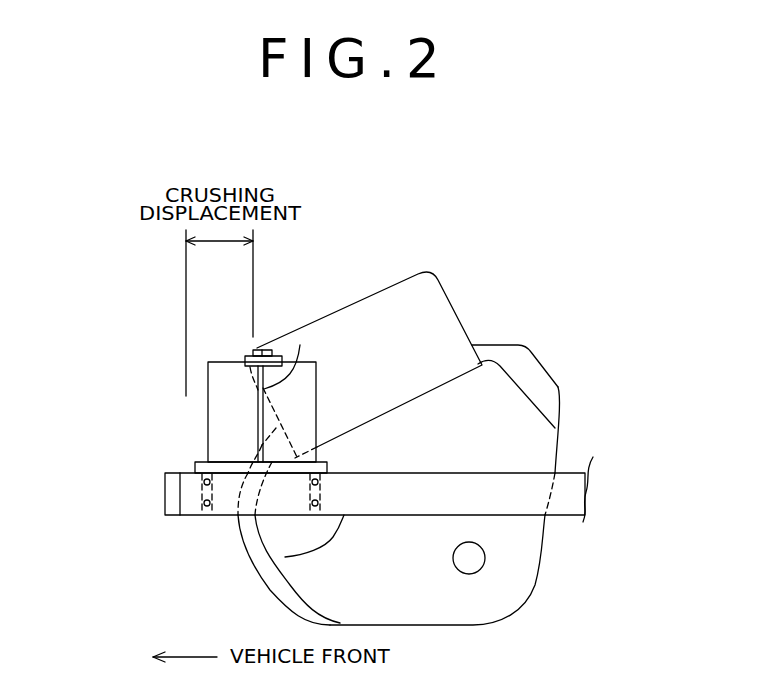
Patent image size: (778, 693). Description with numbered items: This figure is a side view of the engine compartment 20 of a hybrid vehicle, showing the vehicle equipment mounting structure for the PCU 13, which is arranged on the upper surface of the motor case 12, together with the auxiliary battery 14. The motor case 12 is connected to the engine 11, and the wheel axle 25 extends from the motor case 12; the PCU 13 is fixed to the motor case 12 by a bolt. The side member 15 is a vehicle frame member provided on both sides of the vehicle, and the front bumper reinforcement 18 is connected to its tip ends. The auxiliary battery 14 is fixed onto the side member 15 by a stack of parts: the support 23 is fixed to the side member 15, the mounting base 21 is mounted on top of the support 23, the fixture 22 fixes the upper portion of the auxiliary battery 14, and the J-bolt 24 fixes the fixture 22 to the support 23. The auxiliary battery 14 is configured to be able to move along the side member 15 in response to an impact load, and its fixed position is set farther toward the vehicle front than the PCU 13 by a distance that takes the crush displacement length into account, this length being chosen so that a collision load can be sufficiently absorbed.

The engine 11 is at (543, 360).
The motor case 12 is at (540, 403).
The PCU 13 is at (450, 306).
The auxiliary battery 14 is at (207, 380).
The side member 15 is at (285, 557).
The front bumper reinforcement 18 is at (164, 492).
The engine compartment 20 is at (405, 201).
The mounting base 21 is at (194, 465).
The fixture 22 is at (246, 353).
The support 23 is at (201, 501).
The J-bolt 24 is at (300, 346).
The wheel axle 25 is at (485, 558).